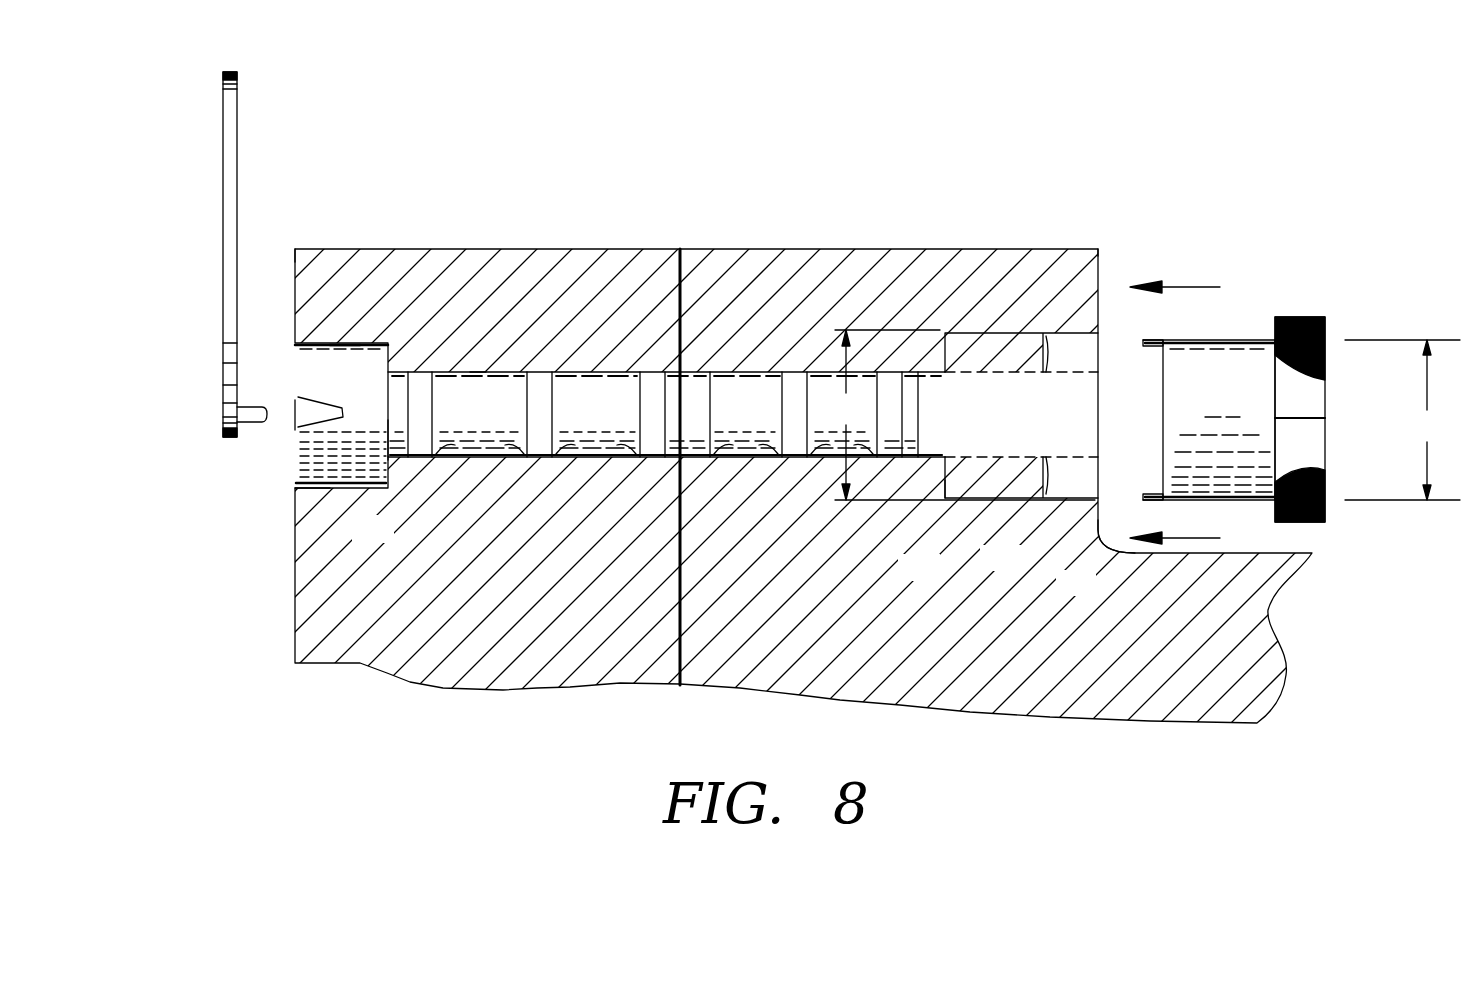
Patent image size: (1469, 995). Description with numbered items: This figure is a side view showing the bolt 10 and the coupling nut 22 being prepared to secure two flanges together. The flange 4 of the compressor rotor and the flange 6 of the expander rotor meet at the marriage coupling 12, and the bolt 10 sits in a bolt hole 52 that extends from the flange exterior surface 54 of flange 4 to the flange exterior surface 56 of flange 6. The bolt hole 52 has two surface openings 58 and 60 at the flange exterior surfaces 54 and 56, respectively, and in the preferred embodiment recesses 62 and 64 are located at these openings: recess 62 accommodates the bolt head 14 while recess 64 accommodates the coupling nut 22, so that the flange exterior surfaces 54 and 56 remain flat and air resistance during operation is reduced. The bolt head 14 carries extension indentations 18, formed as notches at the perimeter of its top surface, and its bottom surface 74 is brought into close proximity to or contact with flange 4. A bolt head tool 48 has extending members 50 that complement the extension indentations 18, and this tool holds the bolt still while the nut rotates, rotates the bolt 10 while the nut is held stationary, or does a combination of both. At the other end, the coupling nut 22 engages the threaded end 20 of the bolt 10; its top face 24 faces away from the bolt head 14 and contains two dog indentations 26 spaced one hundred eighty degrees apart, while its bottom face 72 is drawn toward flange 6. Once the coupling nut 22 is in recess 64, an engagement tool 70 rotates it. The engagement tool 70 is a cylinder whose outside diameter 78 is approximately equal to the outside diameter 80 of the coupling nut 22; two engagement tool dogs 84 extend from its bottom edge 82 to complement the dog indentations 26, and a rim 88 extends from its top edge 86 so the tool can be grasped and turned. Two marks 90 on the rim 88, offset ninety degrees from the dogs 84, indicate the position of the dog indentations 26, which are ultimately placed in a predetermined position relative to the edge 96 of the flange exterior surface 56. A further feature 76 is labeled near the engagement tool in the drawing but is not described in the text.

The flange 4 is at (590, 249).
The flange 6 is at (800, 249).
The bolt 10 is at (769, 420).
The marriage coupling 12 is at (710, 232).
The bolt head 14 is at (312, 378).
The extension indentations 18 is at (300, 415).
The threaded end 20 is at (1071, 372).
The coupling nut 22 is at (990, 333).
The top face 24 is at (1050, 475).
The dog indentations 26 is at (1040, 340).
The bolt head tool 48 is at (223, 281).
The extending members 50 is at (252, 422).
The bolt hole 52 is at (478, 372).
The flange exterior surface 54 is at (295, 267).
The flange exterior surface 56 is at (1100, 277).
The surface opening 58 is at (298, 488).
The surface opening 60 is at (1162, 525).
The recess 62 is at (345, 343).
The recess 64 is at (1086, 499).
The engagement tool 70 is at (1243, 400).
The bottom face 72 is at (948, 489).
The bottom surface 74 is at (388, 428).
The ring end 76 is at (1262, 340).
The outside diameter 78 is at (1402, 420).
The outside diameter 80 is at (961, 415).
The bottom edge 82 is at (1192, 362).
The engagement tool dogs 84 is at (1158, 342).
The top edge 86 is at (1275, 453).
The rim 88 is at (1316, 317).
The marks 90 is at (1325, 418).
The edge 96 is at (1098, 251).